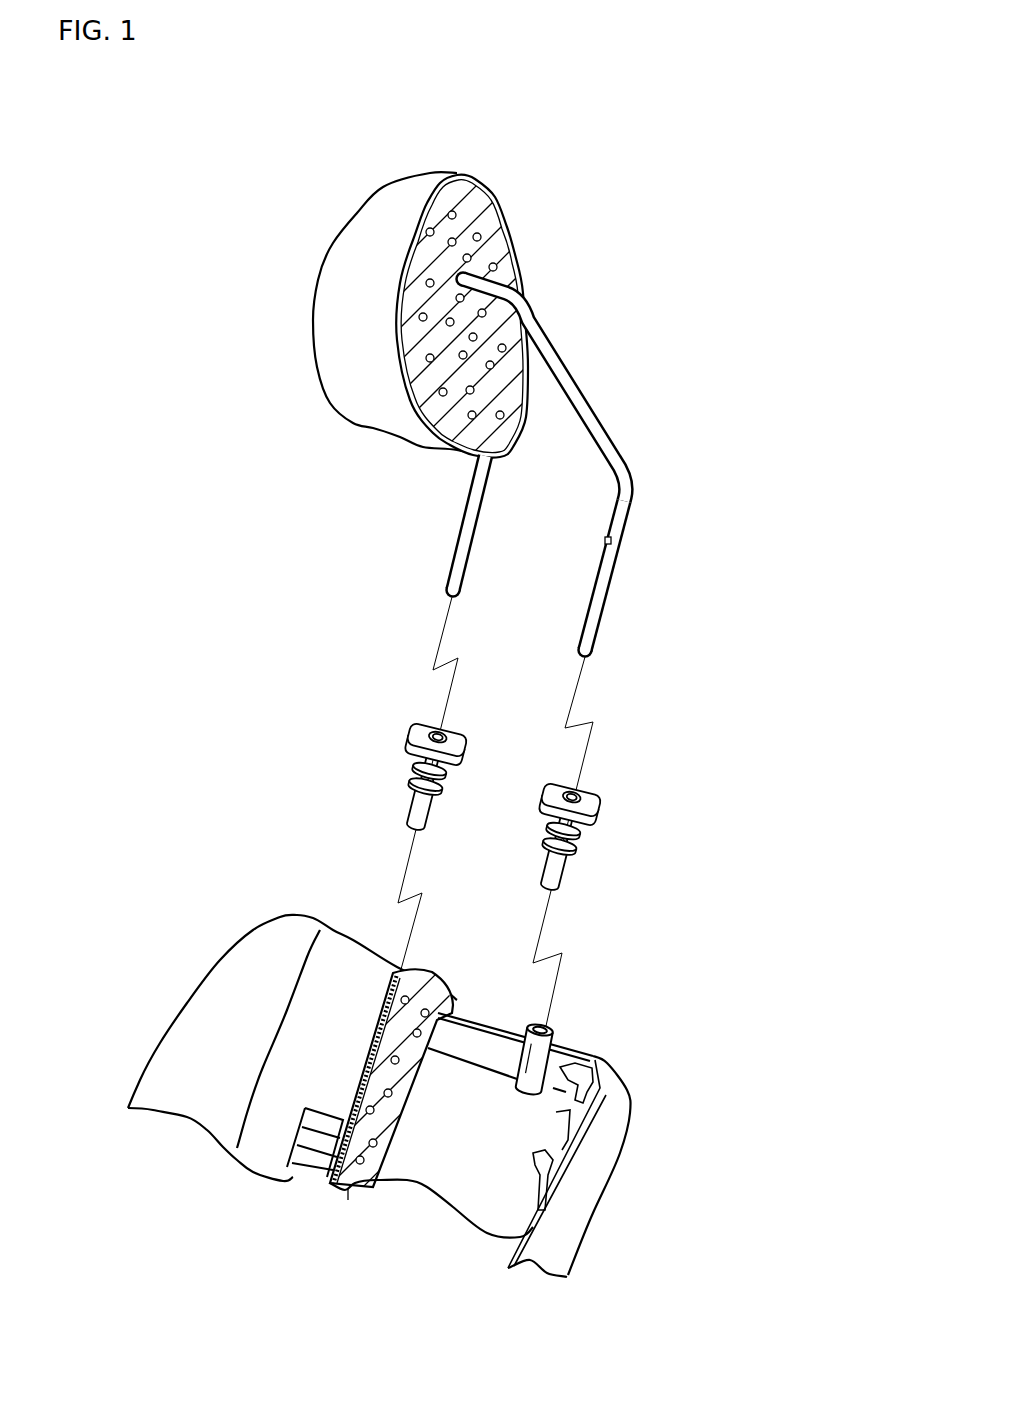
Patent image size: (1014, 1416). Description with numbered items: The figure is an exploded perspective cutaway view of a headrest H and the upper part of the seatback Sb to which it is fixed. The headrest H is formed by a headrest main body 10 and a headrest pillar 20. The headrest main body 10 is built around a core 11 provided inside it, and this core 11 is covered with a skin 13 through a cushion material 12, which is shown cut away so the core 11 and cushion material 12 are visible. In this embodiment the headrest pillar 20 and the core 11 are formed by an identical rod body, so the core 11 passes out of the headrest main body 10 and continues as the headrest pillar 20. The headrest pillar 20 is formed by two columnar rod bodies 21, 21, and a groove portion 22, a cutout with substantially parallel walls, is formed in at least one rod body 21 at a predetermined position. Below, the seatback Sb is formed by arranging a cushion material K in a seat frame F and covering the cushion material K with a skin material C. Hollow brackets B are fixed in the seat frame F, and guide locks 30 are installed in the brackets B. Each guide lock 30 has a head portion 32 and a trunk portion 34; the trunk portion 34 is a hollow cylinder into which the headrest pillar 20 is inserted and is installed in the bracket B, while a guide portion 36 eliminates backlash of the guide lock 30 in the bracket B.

The headrest main body 10 is at (507, 382).
The core 11 is at (522, 327).
The cushion material 12 is at (476, 238).
The skin 13 is at (470, 180).
The headrest pillar 20 is at (550, 464).
The columnar rod body 21 is at (458, 560).
The groove portion 22 is at (618, 540).
The guide lock 30 is at (566, 806).
The head portion 32 is at (634, 830).
The trunk portion 34 is at (605, 849).
The guide portion 36 is at (415, 772).
The headrest H is at (485, 382).
The seatback Sb is at (359, 1056).
The bracket B is at (575, 1032).
The seat frame F is at (590, 1175).
The skin material C is at (295, 1180).
The cushion material K is at (347, 1185).